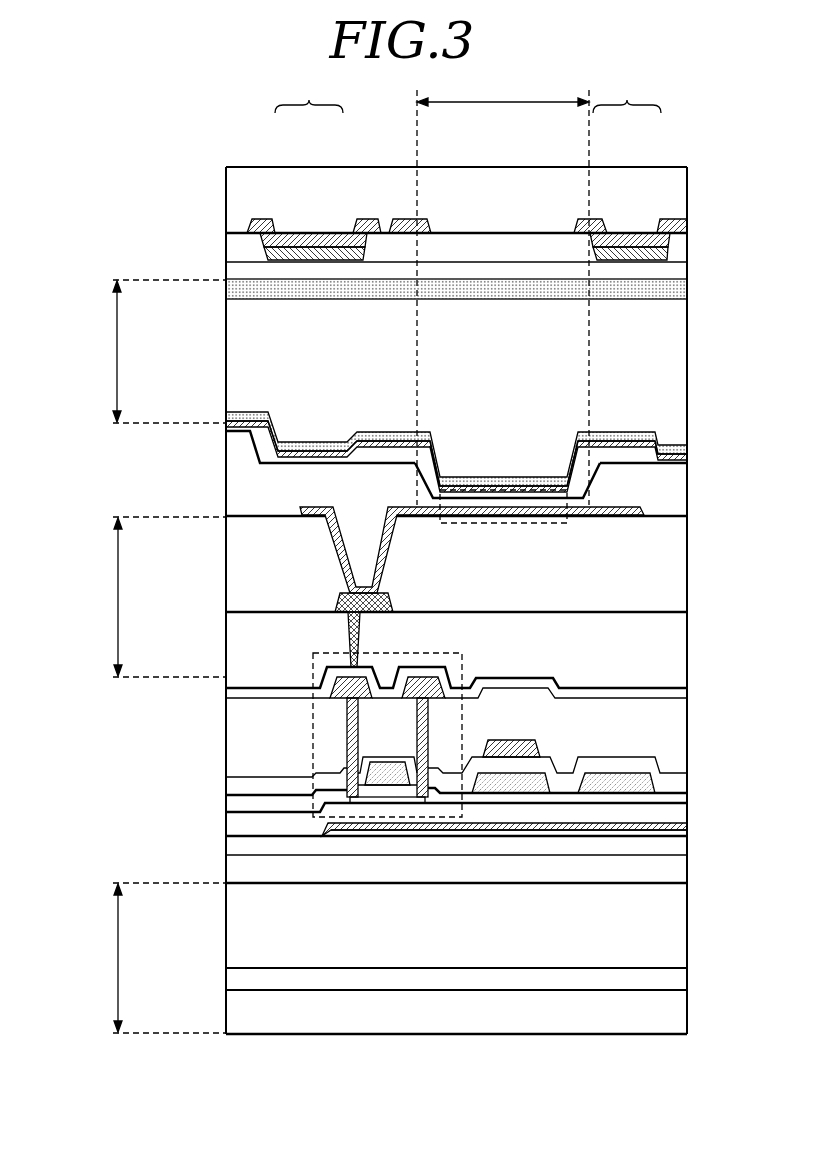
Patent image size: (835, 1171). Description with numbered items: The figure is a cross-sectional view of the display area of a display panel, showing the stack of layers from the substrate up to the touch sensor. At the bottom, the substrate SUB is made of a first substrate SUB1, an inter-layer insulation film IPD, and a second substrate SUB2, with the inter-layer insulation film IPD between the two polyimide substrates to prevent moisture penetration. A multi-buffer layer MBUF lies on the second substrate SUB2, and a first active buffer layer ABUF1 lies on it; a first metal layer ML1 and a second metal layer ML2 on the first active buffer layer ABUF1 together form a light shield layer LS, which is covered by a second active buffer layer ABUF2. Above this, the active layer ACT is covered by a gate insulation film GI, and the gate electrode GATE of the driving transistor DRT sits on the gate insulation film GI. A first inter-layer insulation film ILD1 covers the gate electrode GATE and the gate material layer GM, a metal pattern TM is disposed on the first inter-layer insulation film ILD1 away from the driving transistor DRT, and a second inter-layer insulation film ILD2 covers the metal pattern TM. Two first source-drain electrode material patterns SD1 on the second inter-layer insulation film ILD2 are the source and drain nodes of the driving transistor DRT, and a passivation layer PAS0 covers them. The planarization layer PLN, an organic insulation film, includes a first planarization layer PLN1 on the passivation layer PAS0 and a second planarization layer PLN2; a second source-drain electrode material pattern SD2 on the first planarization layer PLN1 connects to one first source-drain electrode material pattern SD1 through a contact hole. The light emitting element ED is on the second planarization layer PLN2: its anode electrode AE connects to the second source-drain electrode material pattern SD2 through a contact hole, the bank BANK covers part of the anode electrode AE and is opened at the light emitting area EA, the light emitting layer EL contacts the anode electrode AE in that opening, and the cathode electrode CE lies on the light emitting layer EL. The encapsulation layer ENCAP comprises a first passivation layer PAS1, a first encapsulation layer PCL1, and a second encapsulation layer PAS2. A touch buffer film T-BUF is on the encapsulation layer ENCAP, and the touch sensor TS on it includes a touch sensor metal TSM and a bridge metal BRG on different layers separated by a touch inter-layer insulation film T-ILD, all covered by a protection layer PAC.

The protection layer PAC is at (234, 197).
The touch inter-layer insulation film T-ILD is at (234, 245).
The touch buffer film T-BUF is at (234, 266).
The touch sensor metal TSM is at (298, 230).
The bridge metal BRG is at (322, 230).
The touch sensor TS is at (468, 91).
The light emitting area EA is at (503, 288).
The second encapsulation layer PAS2 is at (234, 287).
The first encapsulation layer PCL1 is at (234, 352).
The first passivation layer PAS1 is at (227, 417).
The encapsulation layer ENCAP is at (136, 351).
The cathode electrode CE is at (230, 428).
The bank BANK is at (234, 460).
The light emitting layer EL is at (433, 498).
The light emitting element ED is at (503, 523).
The anode electrode AE is at (300, 512).
The second planarization layer PLN2 is at (234, 559).
The second source-drain electrode material pattern SD2 is at (335, 597).
The first planarization layer PLN1 is at (234, 642).
The planarization layer PLN is at (150, 597).
The driving transistor DRT is at (410, 652).
The passivation layer PAS0 is at (234, 692).
The first source-drain electrode material patterns SD1 is at (418, 727).
The second inter-layer insulation film ILD2 is at (234, 759).
The first inter-layer insulation film ILD1 is at (234, 780).
The gate insulation film GI is at (234, 802).
The gate electrode GATE is at (388, 775).
The active layer ACT is at (372, 800).
The metal pattern TM is at (500, 757).
The gate material layer GM is at (522, 787).
The second active buffer layer ABUF2 is at (234, 823).
The first active buffer layer ABUF1 is at (234, 844).
The second metal layer ML2 is at (630, 825).
The first metal layer ML1 is at (583, 833).
The light shield layer LS is at (504, 967).
The multi-buffer layer MBUF is at (234, 864).
The second substrate SUB2 is at (234, 925).
The inter-layer insulation film IPD is at (234, 977).
The first substrate SUB1 is at (234, 1009).
The substrate SUB is at (149, 958).